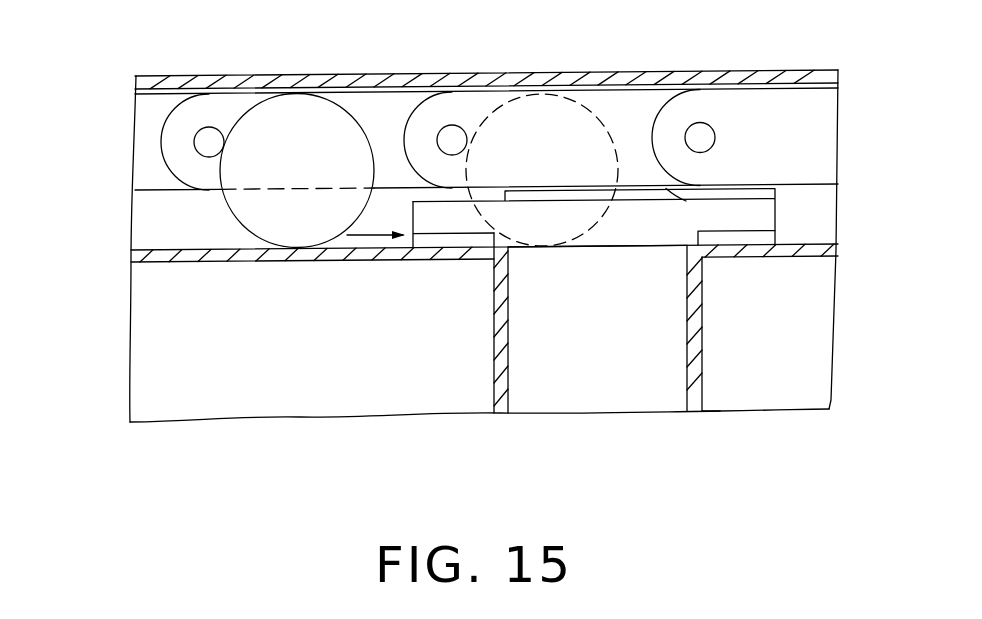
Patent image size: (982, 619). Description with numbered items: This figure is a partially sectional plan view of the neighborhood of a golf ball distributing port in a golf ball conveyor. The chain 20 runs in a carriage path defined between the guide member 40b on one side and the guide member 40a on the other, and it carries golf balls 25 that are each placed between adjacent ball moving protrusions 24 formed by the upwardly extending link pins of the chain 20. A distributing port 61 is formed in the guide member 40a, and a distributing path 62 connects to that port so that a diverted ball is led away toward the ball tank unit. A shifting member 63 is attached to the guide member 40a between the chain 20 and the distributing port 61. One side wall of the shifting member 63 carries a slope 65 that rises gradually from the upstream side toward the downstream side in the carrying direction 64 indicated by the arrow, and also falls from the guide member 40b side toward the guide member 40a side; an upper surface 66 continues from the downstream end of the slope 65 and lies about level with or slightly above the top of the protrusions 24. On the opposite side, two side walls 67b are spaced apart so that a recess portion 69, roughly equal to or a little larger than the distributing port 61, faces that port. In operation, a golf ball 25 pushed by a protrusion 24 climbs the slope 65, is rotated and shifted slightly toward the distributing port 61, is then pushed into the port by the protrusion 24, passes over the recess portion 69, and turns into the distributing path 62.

The chain 20 is at (793, 105).
The guide member 40b is at (164, 84).
The golf ball 25 is at (310, 100).
The ball moving protrusion 24 is at (697, 130).
The shifting member 63 is at (755, 215).
The carrying direction 64 is at (365, 238).
The side wall 67b is at (762, 235).
The guide member 40a is at (157, 262).
The upper surface 66 is at (738, 190).
The distributing port 61 is at (532, 253).
The slope 65 is at (577, 247).
The recess portion 69 is at (637, 247).
The distributing path 62 is at (663, 395).